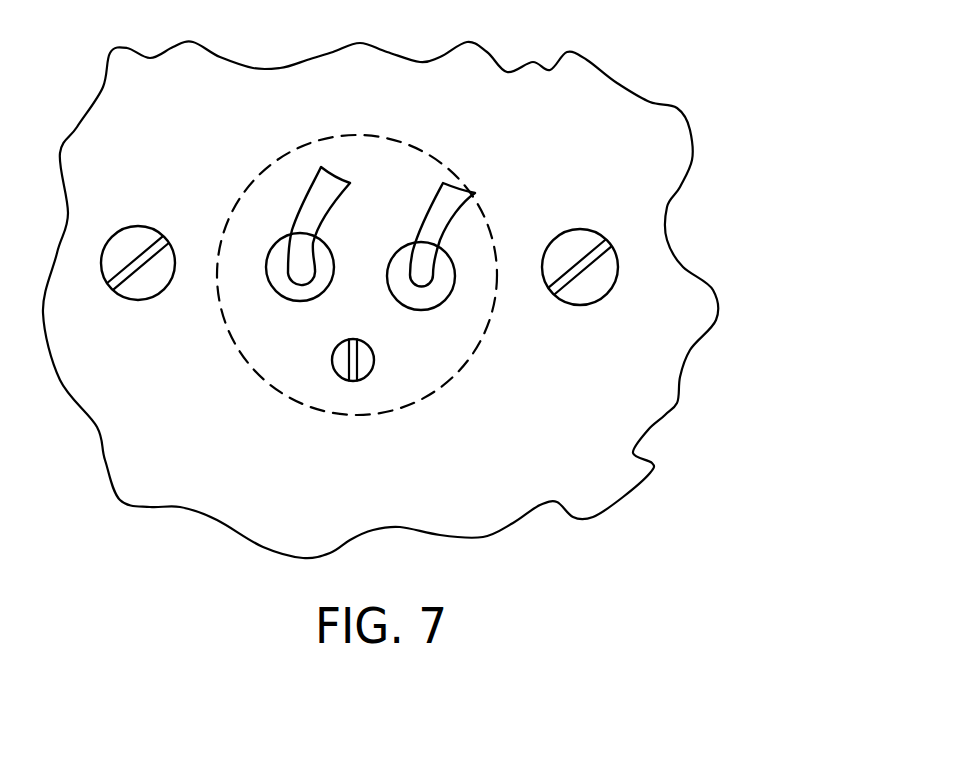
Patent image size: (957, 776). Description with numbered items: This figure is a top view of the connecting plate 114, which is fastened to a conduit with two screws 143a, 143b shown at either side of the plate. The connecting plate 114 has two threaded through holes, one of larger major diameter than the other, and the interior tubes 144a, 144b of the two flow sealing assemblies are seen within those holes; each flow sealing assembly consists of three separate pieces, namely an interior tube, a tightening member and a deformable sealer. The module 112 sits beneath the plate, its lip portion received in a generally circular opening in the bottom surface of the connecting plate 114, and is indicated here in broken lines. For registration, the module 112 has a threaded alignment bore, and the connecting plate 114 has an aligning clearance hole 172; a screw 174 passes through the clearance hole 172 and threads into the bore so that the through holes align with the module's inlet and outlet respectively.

The module 112 is at (340, 133).
The connecting plate 114 is at (742, 174).
The screw 143a is at (128, 247).
The screw 143b is at (597, 283).
The interior tube 144a is at (307, 208).
The interior tube 144b is at (430, 220).
The aligning clearance hole 172 is at (325, 373).
The screw 174 is at (367, 360).